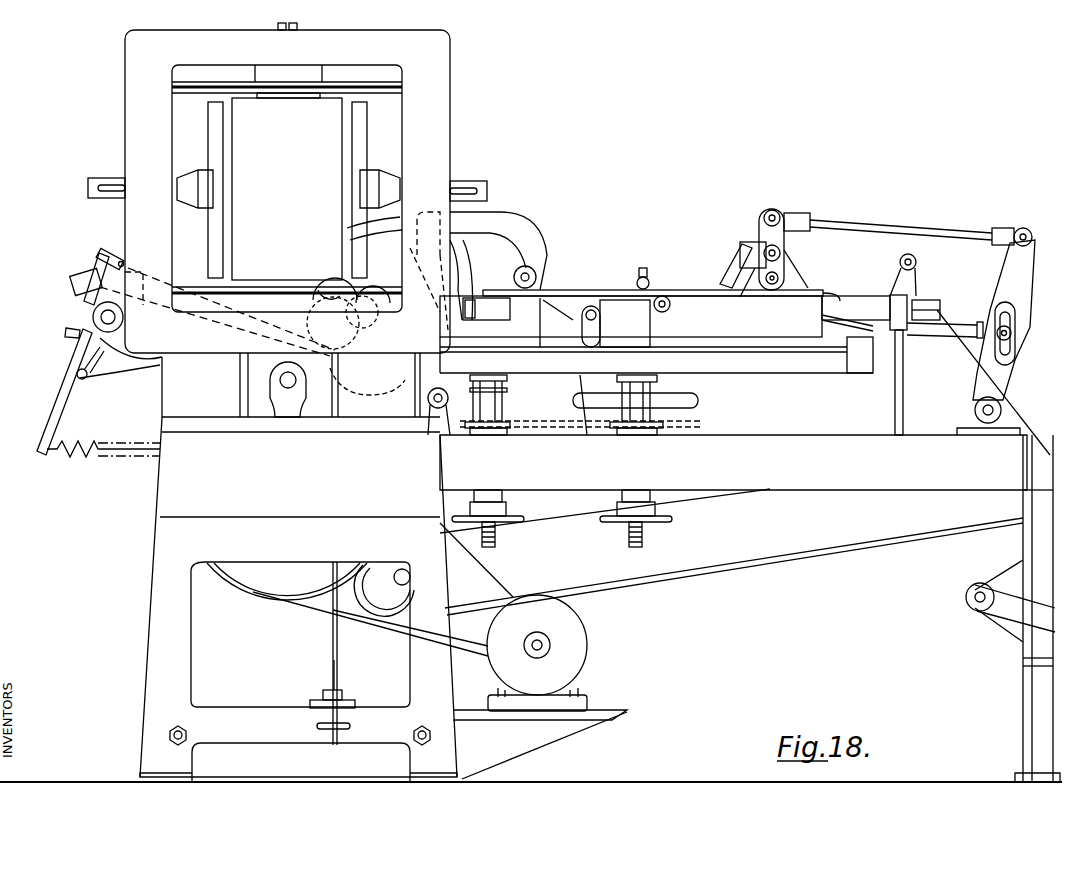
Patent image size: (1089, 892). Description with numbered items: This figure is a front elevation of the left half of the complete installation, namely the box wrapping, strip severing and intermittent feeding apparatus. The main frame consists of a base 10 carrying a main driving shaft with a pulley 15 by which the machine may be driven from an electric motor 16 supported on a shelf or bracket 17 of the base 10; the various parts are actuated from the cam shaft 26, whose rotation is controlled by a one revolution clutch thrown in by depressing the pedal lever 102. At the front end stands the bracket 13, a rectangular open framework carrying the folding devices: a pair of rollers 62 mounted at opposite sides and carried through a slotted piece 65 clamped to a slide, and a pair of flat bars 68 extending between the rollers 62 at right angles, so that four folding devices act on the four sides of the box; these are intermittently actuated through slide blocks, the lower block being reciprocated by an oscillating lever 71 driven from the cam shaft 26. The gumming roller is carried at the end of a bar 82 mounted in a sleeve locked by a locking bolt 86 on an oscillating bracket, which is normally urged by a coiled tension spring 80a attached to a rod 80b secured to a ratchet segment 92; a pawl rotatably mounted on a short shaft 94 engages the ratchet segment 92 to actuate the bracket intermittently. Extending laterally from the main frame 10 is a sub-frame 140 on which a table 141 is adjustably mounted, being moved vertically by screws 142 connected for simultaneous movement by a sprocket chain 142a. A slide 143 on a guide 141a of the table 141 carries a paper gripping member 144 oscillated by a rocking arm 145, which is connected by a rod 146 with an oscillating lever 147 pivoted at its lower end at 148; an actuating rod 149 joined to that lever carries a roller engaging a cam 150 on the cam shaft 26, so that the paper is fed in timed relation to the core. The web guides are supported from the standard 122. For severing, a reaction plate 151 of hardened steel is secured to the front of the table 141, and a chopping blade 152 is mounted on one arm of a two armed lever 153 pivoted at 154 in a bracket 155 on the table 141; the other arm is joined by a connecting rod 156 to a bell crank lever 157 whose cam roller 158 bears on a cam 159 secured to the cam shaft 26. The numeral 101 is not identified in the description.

The base 10 is at (165, 480).
The bracket 13 is at (440, 40).
The pulley 15 is at (250, 591).
The electric motor 16 is at (587, 640).
The shelf or bracket 17 is at (627, 715).
The cam shaft 26 is at (333, 270).
The rollers 62 is at (374, 88).
The slotted piece 65 is at (487, 184).
The flat bars 68 is at (362, 138).
The oscillating lever 71 is at (292, 405).
The coiled tension spring 80a is at (70, 455).
The rod 80b is at (47, 422).
The bar 82 is at (73, 278).
The locking bolt 86 is at (97, 249).
The ratchet segment 92 is at (65, 332).
The short shaft 94 is at (83, 380).
The pivot bracket 101 is at (118, 352).
The pedal lever 102 is at (330, 673).
The standard 122 is at (507, 383).
The sub-frame 140 is at (760, 447).
The table 141 is at (770, 368).
The guide 141a is at (855, 345).
The screws 142 is at (653, 384).
The sprocket chain 142a is at (520, 425).
The slide 143 is at (682, 308).
The paper gripping member 144 is at (732, 262).
The rocking arm 145 is at (774, 233).
The rod 146 is at (918, 230).
The oscillating lever 147 is at (1012, 267).
The pivot 148 is at (1002, 404).
The actuating rod 149 is at (937, 312).
The cam 150 is at (455, 265).
The reaction block or plate 151 is at (354, 322).
The chopping blade 152 is at (418, 240).
The two armed lever 153 is at (512, 214).
The pivot 154 is at (550, 270).
The bracket 155 is at (530, 328).
The connecting rod 156 is at (600, 323).
The bell crank lever 157 is at (533, 427).
The cam roller 158 is at (507, 272).
The cam 159 is at (367, 382).